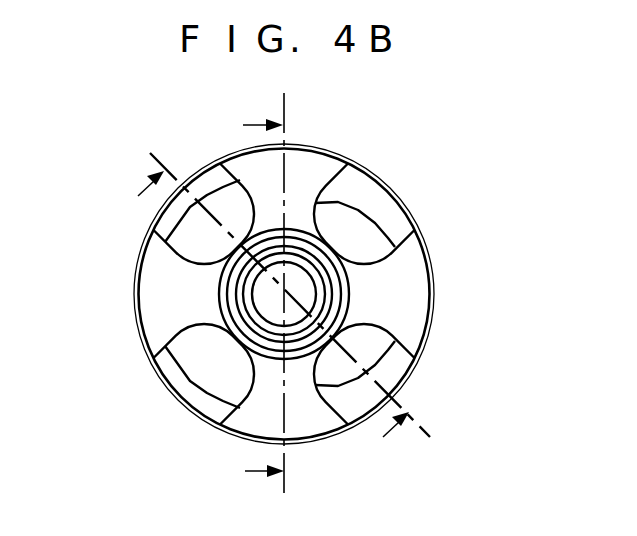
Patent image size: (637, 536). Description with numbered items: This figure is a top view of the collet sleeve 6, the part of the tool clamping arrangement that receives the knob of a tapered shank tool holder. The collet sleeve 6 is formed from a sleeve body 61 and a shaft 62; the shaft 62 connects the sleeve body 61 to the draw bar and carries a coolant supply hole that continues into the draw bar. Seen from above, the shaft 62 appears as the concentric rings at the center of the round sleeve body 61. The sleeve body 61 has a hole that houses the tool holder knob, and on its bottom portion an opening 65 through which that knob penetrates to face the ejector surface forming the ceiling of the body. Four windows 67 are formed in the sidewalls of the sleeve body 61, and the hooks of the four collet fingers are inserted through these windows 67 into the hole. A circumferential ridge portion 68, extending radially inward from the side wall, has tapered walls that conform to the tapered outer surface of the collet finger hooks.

The collet sleeve 6 is at (96, 400).
The sleeve body 61 is at (310, 450).
The shaft 62 is at (300, 235).
The opening 65 is at (228, 350).
The windows 67 is at (371, 190).
The circumferential ridge portion 68 is at (357, 245).